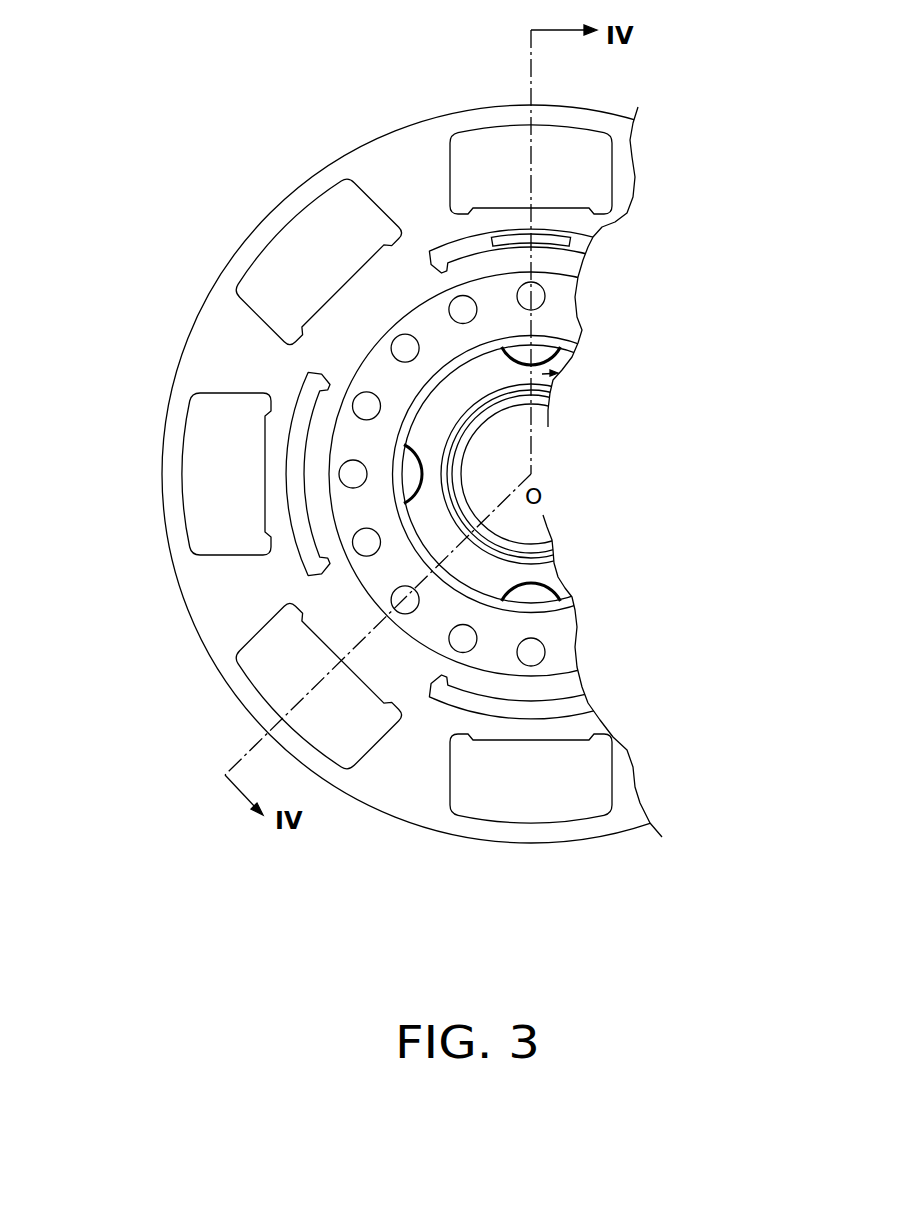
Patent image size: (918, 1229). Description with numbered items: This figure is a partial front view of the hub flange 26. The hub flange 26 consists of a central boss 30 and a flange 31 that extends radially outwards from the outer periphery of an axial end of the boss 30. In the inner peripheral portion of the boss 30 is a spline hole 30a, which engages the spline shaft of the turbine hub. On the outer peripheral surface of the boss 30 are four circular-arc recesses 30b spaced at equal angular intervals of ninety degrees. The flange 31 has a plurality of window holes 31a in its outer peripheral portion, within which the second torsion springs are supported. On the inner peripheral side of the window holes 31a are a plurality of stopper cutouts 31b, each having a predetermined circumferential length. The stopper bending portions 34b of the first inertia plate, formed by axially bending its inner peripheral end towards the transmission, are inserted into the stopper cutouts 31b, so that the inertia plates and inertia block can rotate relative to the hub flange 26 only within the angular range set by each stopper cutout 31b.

The hub flange 26 is at (296, 127).
The flange 31 is at (425, 801).
The window hole 31a is at (590, 130).
The stopper cutout 31b is at (580, 258).
The stopper bending portion 34b is at (567, 249).
The boss 30 is at (560, 362).
The spline hole 30a is at (517, 540).
The circular-arc recess 30b is at (560, 352).